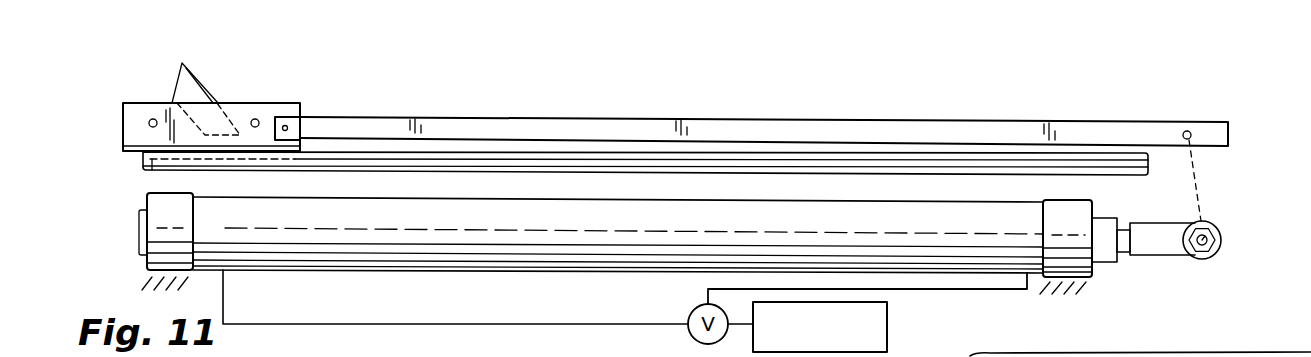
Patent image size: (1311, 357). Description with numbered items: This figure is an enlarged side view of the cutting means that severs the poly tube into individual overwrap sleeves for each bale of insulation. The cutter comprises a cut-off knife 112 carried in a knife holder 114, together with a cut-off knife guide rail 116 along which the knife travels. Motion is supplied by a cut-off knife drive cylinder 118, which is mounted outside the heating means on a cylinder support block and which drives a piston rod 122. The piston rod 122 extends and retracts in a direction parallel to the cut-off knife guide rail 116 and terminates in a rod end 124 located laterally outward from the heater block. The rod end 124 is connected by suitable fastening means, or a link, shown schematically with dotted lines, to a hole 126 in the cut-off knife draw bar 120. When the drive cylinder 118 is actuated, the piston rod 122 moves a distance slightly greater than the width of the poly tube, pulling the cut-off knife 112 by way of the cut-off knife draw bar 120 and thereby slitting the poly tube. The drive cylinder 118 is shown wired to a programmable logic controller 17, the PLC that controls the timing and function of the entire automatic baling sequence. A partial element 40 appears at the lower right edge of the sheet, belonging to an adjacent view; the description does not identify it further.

The cut-off knife 112 is at (186, 93).
The knife holder 114 is at (150, 112).
The cut-off knife guide rail 116 is at (145, 172).
The cut-off knife drive cylinder 118 is at (588, 253).
The cut-off knife draw bar 120 is at (765, 125).
The piston rod 122 is at (1125, 240).
The rod end 124 is at (1213, 234).
The hole 126 is at (1190, 131).
The programmable logic controller 17 is at (890, 325).
The frame member (adjacent figure) 40 is at (1256, 356).